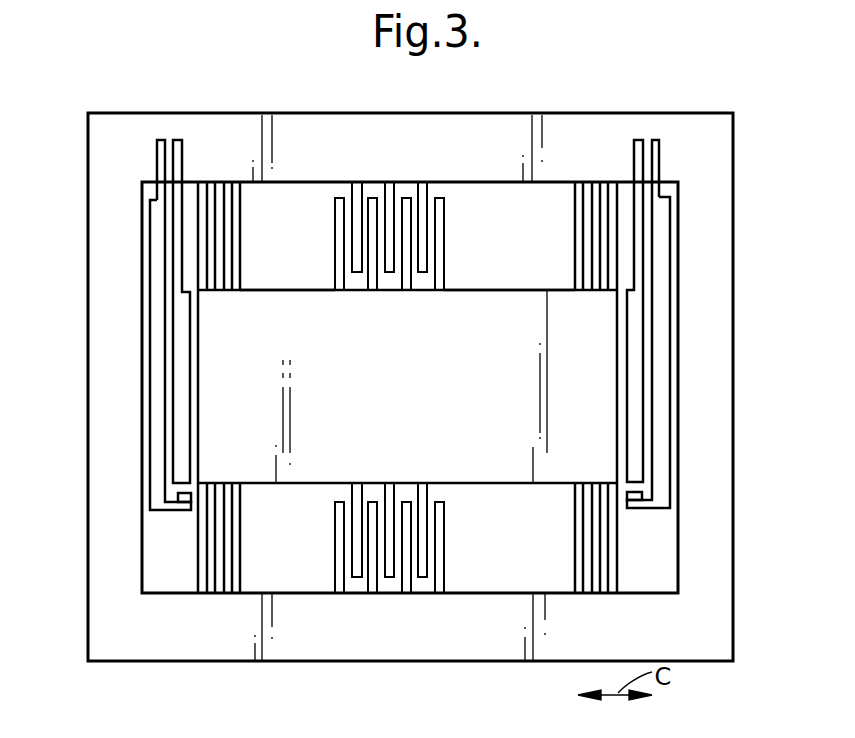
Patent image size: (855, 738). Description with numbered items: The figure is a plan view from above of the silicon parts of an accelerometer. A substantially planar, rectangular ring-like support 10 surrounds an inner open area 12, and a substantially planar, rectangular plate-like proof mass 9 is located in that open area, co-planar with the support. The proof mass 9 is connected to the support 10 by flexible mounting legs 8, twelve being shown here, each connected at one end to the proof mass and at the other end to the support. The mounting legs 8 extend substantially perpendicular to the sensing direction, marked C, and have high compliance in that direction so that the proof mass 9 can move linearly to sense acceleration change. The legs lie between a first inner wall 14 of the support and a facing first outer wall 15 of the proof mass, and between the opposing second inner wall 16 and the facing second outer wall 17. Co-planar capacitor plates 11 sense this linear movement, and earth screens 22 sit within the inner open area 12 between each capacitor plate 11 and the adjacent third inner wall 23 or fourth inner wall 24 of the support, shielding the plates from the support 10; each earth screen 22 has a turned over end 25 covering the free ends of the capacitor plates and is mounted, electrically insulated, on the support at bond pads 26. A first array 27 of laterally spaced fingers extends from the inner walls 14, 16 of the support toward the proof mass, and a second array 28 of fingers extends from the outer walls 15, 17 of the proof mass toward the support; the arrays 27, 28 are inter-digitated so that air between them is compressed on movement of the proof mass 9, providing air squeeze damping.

The mounting legs 8 is at (237, 230).
The proof mass 9 is at (391, 406).
The support 10 is at (727, 258).
The capacitor plates 11 is at (185, 348).
The inner open area 12 is at (480, 197).
The first inner wall 14 is at (548, 183).
The first outer wall 15 is at (508, 288).
The second inner wall 16 is at (175, 590).
The second outer wall 17 is at (533, 488).
The earth screens 22 is at (160, 373).
The third inner wall 23 is at (152, 551).
The fourth inner wall 24 is at (676, 536).
The turned over end 25 is at (165, 500).
The bond pads 26 is at (161, 163).
The first array of fingers 27 is at (353, 190).
The second array of fingers 28 is at (335, 247).